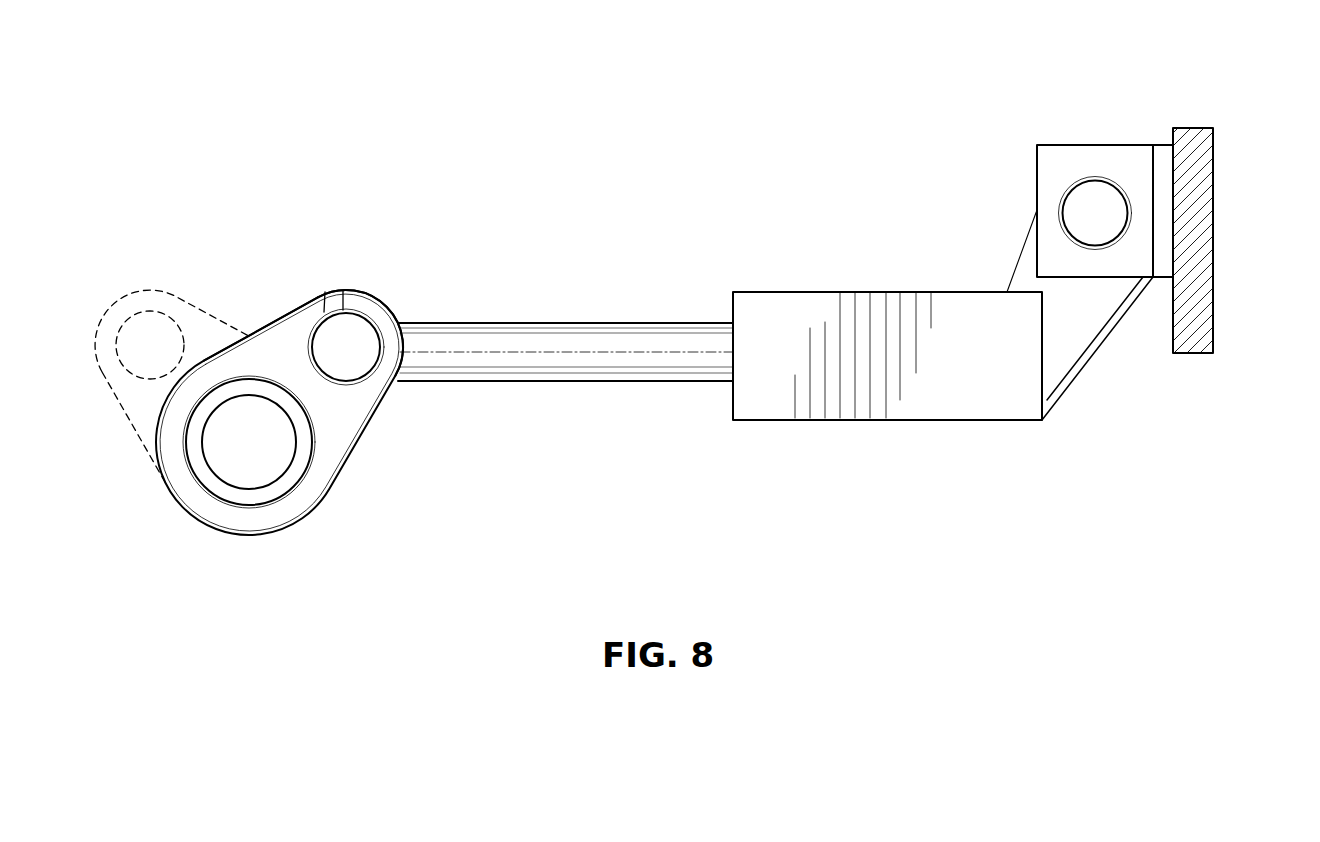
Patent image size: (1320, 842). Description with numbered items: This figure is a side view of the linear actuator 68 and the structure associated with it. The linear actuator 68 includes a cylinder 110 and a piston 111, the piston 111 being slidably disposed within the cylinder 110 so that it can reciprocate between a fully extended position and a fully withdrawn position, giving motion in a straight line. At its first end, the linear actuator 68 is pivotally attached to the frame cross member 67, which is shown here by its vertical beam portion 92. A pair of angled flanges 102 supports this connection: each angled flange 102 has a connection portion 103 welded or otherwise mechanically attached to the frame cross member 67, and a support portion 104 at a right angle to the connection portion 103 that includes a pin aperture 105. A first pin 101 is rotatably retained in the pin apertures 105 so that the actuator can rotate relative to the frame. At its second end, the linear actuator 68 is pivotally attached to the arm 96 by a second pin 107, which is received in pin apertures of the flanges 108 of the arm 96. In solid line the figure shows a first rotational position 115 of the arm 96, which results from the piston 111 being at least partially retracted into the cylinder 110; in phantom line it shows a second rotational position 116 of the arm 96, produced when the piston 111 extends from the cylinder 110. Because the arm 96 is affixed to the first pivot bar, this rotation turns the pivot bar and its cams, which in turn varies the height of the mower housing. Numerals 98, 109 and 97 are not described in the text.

The linear actuator 68 is at (652, 117).
The arm 96 is at (352, 467).
The lever arm end 98 is at (390, 313).
The flanges 108 is at (350, 405).
The first rotational position 115 is at (278, 318).
The second pin 107 is at (342, 330).
The slot 109 is at (343, 307).
The second rotational position 116 is at (148, 290).
The piston 111 is at (548, 383).
The cylinder 110 is at (852, 421).
The support strut 97 is at (1083, 368).
The angled flanges 102 is at (1121, 165).
The connection portion 103 is at (1057, 163).
The first pin 101 is at (1097, 200).
The pin aperture 105 is at (1060, 207).
The support portion 104 is at (1157, 220).
The vertical beam portion 92 is at (1238, 240).
The frame cross member 67 is at (1197, 314).